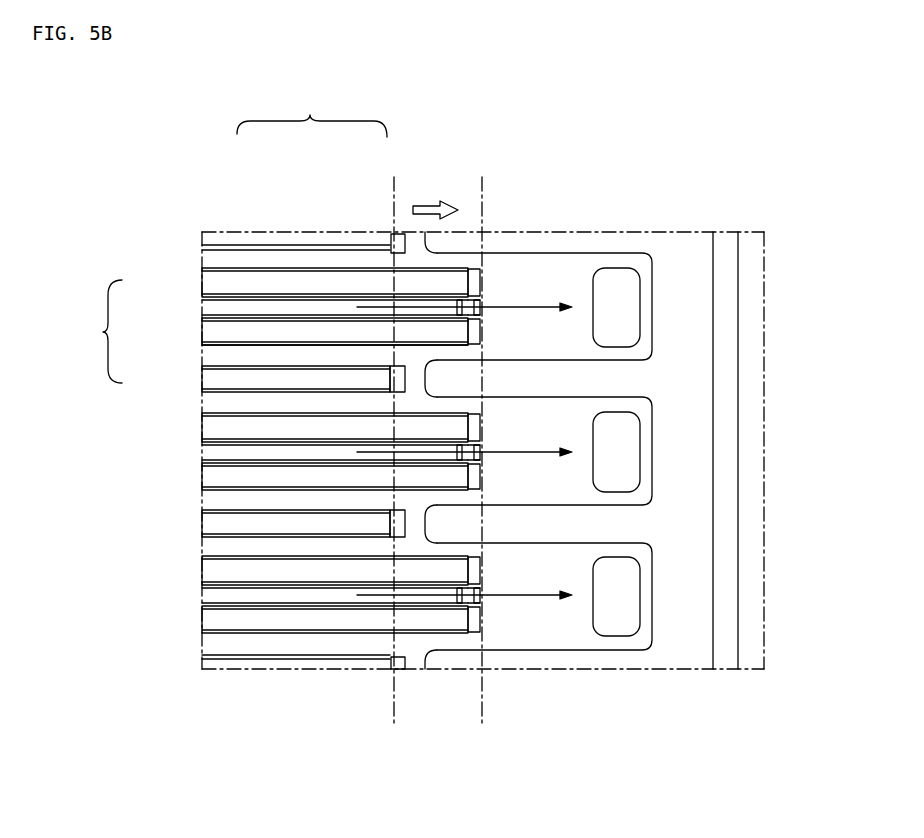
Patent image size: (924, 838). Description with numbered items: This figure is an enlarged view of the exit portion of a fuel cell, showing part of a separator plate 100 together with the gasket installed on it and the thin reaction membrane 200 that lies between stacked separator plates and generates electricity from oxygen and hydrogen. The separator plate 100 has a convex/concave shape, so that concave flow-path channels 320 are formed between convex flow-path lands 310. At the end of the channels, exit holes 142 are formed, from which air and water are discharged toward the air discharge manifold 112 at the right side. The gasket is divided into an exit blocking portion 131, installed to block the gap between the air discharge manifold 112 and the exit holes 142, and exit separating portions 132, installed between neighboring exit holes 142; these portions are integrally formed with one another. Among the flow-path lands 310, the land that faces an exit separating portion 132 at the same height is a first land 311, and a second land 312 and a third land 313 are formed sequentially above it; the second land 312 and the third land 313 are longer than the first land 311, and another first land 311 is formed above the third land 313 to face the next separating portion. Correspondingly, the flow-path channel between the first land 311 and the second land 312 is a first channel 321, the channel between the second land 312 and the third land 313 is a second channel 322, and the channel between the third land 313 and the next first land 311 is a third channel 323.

The separator plate 100 is at (731, 258).
The air discharge manifold 112 is at (754, 645).
The exit blocking portion 131 is at (675, 258).
The exit separating portion 132 is at (581, 375).
The exit hole 142 is at (619, 298).
The reaction membrane 200 is at (519, 287).
The flow-path land 310 is at (266, 332).
The first land 311 is at (223, 378).
The second land 312 is at (223, 332).
The third land 313 is at (223, 285).
The flow-path channel 320 is at (341, 219).
The first channel 321 is at (333, 355).
The second channel 322 is at (276, 310).
The third channel 323 is at (236, 258).